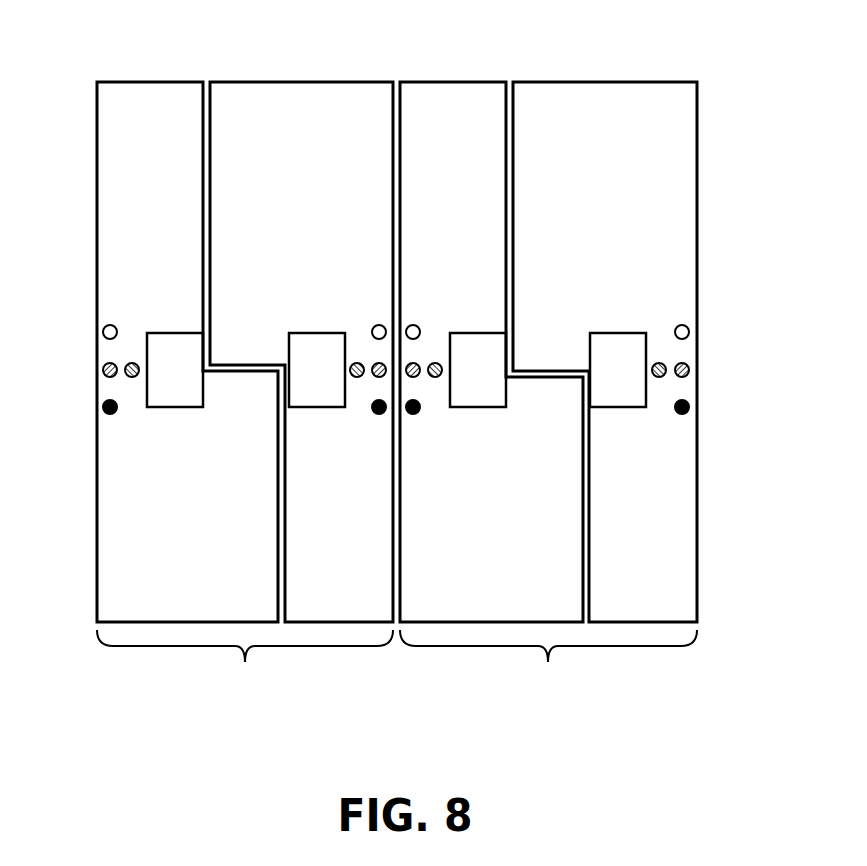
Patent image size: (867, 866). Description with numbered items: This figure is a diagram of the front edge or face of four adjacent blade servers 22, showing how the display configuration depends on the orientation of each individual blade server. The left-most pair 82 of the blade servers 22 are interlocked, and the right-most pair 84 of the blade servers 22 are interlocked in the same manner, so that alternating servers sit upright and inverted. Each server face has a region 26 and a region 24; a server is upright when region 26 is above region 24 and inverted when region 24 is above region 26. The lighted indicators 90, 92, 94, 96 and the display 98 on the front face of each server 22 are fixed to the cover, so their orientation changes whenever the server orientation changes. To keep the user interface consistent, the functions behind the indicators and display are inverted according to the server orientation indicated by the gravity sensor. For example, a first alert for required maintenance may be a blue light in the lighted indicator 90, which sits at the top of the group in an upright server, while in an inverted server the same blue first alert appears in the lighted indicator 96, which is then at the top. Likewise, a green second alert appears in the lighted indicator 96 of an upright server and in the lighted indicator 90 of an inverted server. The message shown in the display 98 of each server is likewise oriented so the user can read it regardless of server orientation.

The blade server 22 is at (145, 81).
The region 24 is at (397, 359).
The region 26 is at (396, 359).
The left-most pair 82 is at (245, 663).
The right-most pair 84 is at (548, 663).
The lighted indicator 90 is at (103, 332).
The lighted indicator 92 is at (103, 370).
The lighted indicator 94 is at (126, 378).
The lighted indicator 96 is at (103, 407).
The display 98 is at (173, 333).